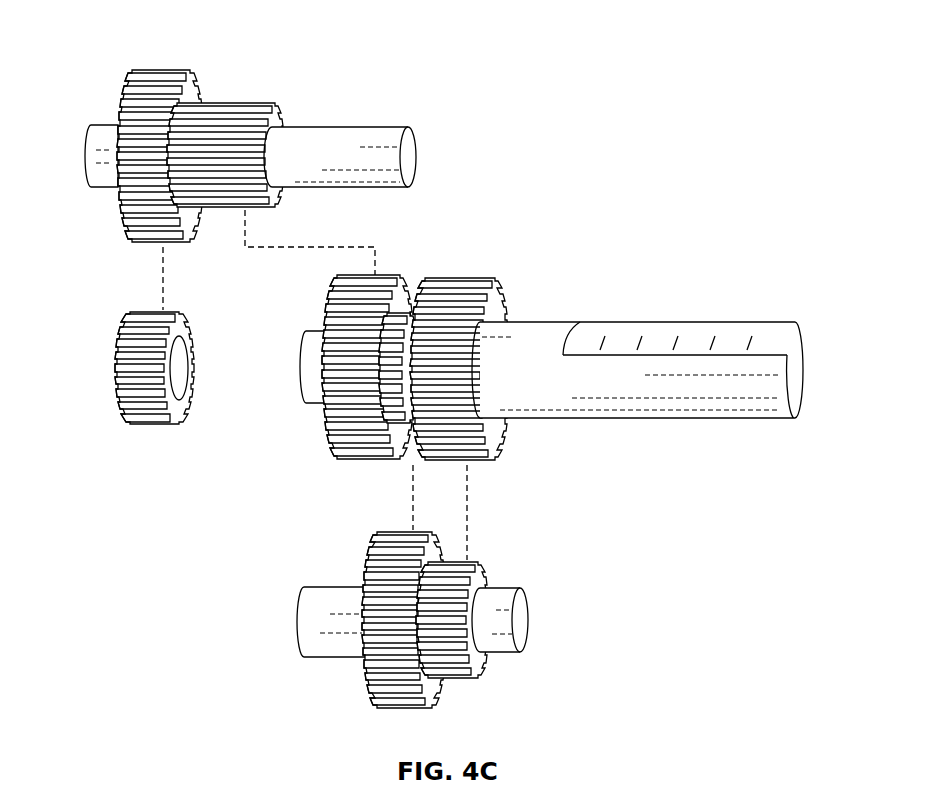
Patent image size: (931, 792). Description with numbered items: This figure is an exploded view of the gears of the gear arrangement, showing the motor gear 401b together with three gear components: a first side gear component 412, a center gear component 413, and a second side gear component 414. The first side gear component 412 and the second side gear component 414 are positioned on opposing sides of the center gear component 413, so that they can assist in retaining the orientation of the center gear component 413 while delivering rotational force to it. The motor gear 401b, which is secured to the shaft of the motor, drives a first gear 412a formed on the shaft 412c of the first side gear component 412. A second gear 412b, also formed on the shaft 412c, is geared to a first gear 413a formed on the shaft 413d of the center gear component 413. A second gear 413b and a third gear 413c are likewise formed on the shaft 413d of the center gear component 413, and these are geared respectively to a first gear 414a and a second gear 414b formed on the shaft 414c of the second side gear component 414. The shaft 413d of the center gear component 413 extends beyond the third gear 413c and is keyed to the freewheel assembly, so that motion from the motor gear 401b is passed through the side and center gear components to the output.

The motor gear 401b is at (118, 376).
The first side gear component 412 is at (307, 126).
The first gear 412a is at (184, 70).
The second gear 412b is at (266, 103).
The shaft 412c is at (366, 127).
The center gear component 413 is at (507, 344).
The first gear 413a is at (358, 458).
The second gear 413b is at (411, 310).
The third gear 413c is at (476, 279).
The shaft 413d is at (318, 344).
The second side gear component 414 is at (388, 636).
The first gear 414a is at (400, 703).
The second gear 414b is at (470, 675).
The shaft 414c is at (530, 620).